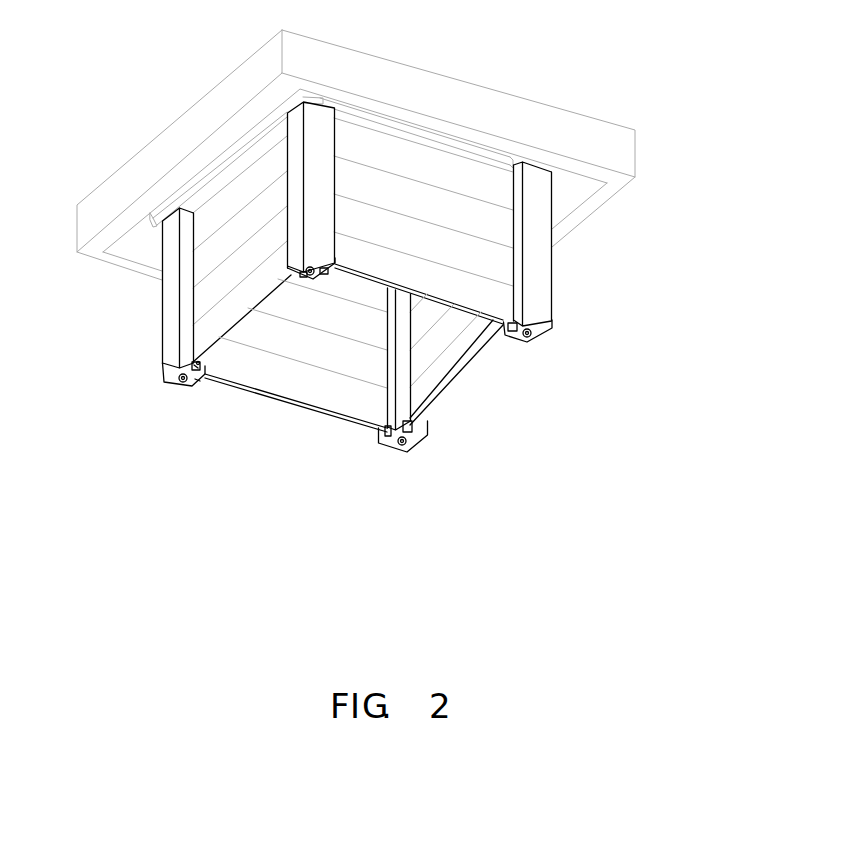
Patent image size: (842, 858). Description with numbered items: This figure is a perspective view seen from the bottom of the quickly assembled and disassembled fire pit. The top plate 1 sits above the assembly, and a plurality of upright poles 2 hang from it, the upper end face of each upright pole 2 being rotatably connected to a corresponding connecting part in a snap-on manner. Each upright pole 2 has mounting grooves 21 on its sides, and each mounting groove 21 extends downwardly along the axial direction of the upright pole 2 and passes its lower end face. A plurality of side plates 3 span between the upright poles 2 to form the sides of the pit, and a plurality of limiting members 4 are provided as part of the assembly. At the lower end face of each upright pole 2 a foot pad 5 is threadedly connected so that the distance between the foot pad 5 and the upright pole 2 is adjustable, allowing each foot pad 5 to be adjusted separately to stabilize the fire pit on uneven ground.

The top plate 1 is at (200, 117).
The upright pole 2 is at (170, 335).
The mounting groove 21 is at (186, 368).
The side plate 3 is at (462, 372).
The limiting member 4 is at (400, 450).
The foot pad 5 is at (183, 384).